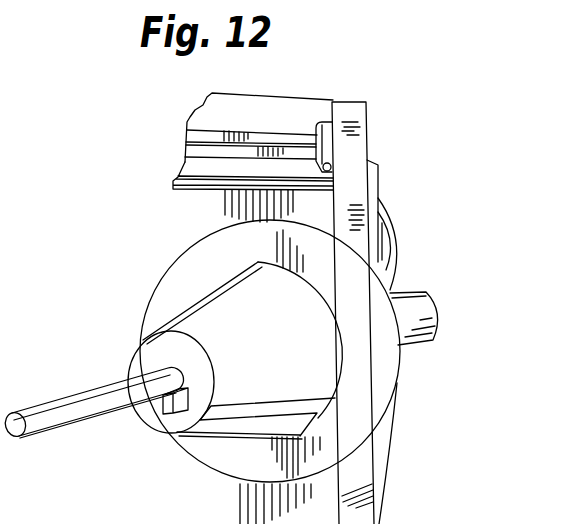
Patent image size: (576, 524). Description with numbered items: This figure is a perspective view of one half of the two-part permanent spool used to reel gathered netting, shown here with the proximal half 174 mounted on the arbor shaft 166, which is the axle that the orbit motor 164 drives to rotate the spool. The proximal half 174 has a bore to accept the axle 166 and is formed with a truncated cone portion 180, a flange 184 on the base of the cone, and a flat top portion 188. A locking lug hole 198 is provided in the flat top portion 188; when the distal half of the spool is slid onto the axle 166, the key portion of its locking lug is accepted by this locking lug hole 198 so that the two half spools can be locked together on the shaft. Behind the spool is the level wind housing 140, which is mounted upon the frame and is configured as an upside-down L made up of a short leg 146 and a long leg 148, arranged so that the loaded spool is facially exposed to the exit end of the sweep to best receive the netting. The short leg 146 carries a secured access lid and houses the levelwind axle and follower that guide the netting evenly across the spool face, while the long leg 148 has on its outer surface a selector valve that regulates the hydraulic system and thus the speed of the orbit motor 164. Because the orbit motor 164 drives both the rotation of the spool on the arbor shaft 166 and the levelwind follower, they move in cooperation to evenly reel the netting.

The level wind housing 140 is at (265, 117).
The short leg of the L 146 is at (187, 177).
The long leg of the L 148 is at (350, 186).
The orbit motor 164 is at (410, 307).
The arbor shaft 166 is at (84, 397).
The proximal half 174 is at (347, 432).
The truncated cone portion 180 is at (228, 294).
The flange 184 is at (398, 384).
The flat top portion 188 is at (197, 365).
The locking lug hole 198 is at (146, 365).